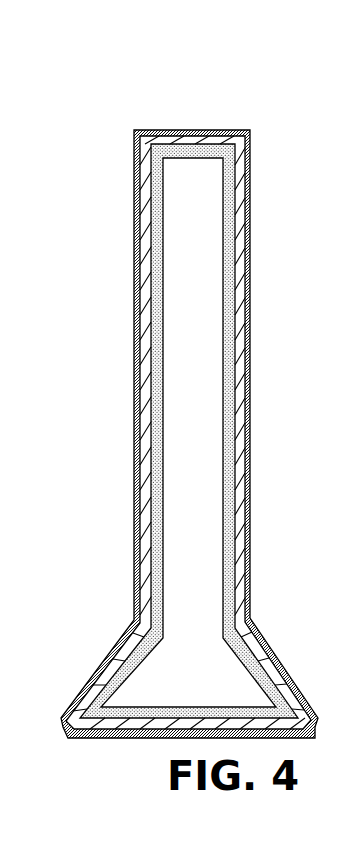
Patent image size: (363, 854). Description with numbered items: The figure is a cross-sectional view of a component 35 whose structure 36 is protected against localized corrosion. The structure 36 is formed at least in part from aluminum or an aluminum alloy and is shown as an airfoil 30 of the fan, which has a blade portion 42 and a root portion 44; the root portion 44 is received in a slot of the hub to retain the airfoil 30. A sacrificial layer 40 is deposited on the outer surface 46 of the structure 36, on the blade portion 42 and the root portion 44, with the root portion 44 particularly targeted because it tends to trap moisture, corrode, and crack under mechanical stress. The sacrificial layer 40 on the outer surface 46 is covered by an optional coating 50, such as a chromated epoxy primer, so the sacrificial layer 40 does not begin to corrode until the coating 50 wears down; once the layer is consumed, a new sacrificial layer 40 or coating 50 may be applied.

The component 35 is at (259, 94).
The airfoil 30 is at (228, 398).
The structure 36 is at (157, 355).
The sacrificial layer 40 is at (241, 455).
The blade portion 42 is at (233, 330).
The root portion 44 is at (251, 666).
The outer surface 46 is at (150, 520).
The coating 50 is at (249, 195).